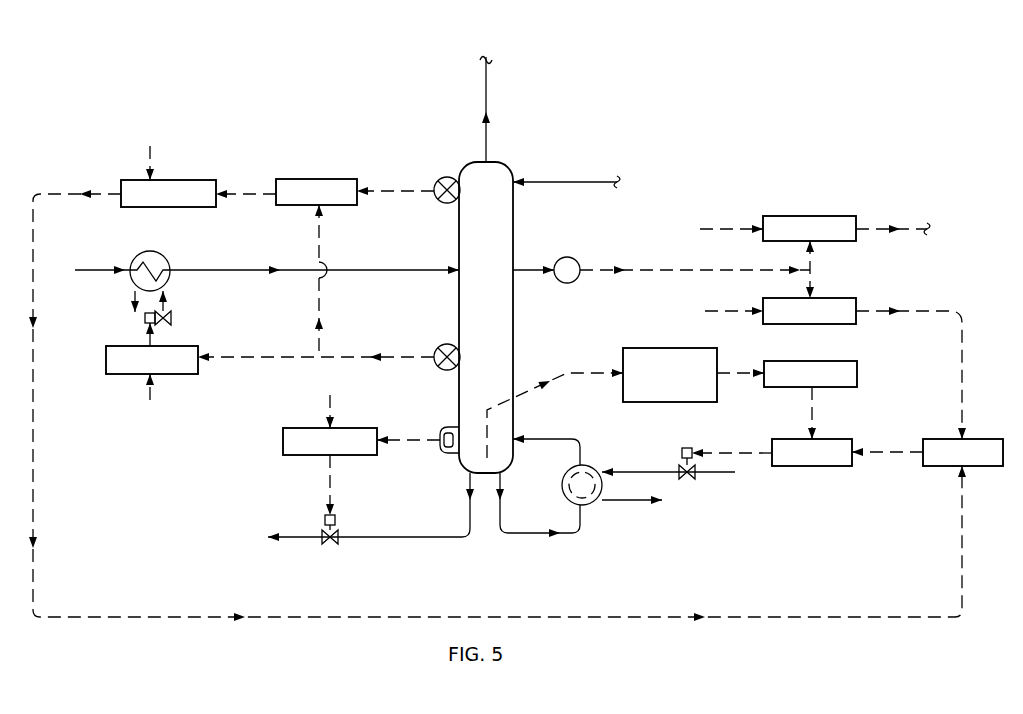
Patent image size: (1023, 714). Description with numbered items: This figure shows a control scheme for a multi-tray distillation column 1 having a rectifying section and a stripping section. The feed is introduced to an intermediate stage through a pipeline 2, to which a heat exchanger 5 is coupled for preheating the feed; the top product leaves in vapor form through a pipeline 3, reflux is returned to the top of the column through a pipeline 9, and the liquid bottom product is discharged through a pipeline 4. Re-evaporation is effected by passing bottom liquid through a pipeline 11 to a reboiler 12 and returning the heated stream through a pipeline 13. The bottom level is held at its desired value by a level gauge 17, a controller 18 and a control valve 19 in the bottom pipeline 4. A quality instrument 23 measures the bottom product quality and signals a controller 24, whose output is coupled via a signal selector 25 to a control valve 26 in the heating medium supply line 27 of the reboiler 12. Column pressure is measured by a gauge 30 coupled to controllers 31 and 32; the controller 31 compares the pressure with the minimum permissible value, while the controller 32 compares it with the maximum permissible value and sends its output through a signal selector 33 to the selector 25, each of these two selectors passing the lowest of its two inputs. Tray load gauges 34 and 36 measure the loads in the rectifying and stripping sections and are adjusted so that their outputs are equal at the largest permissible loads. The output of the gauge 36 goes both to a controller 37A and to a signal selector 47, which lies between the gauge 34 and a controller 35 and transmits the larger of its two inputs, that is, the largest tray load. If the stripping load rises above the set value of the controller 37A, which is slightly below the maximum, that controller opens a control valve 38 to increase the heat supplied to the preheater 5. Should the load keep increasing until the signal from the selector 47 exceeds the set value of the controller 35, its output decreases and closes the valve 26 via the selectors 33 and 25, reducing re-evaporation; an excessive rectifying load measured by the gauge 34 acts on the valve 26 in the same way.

The distillation column 1 is at (492, 331).
The feed pipeline 2 is at (352, 270).
The top product discharge pipeline 3 is at (490, 101).
The bottom product pipeline 4 is at (403, 537).
The heat exchanger 5 is at (136, 258).
The reflux pipeline 9 is at (553, 183).
The bottom liquid pipeline 11 is at (525, 533).
The reboiler 12 is at (566, 477).
The return pipeline 13 is at (540, 439).
The level gauge 17 is at (440, 434).
The controller 18 is at (313, 428).
The control valve 19 is at (332, 544).
The quality instrument 23 is at (676, 402).
The controller 24 is at (818, 361).
The signal selector 25 is at (820, 439).
The control valve 26 is at (690, 480).
The heating medium supply line 27 is at (620, 472).
The pressure gauge 30 is at (562, 283).
The controller 31 is at (816, 216).
The controller 32 is at (822, 298).
The signal selector 33 is at (971, 439).
The tray load gauge 34 is at (442, 179).
The controller 35 is at (180, 180).
The tray load gauge 36 is at (436, 368).
The controller 37A is at (114, 346).
The control valve 38 is at (170, 312).
The signal selector 47 is at (312, 179).